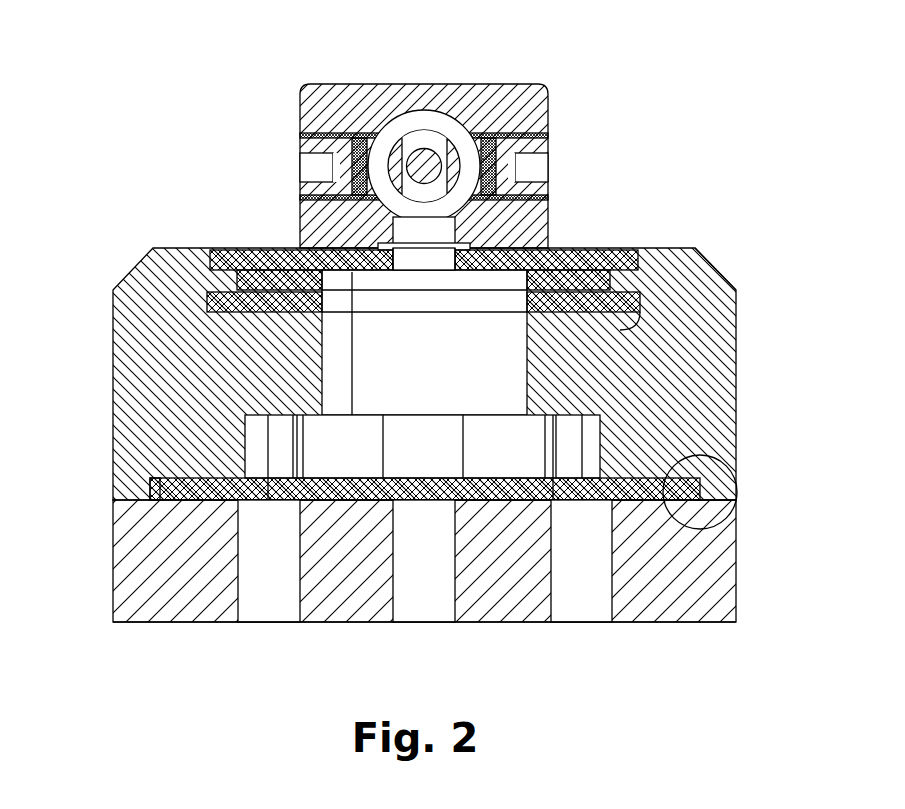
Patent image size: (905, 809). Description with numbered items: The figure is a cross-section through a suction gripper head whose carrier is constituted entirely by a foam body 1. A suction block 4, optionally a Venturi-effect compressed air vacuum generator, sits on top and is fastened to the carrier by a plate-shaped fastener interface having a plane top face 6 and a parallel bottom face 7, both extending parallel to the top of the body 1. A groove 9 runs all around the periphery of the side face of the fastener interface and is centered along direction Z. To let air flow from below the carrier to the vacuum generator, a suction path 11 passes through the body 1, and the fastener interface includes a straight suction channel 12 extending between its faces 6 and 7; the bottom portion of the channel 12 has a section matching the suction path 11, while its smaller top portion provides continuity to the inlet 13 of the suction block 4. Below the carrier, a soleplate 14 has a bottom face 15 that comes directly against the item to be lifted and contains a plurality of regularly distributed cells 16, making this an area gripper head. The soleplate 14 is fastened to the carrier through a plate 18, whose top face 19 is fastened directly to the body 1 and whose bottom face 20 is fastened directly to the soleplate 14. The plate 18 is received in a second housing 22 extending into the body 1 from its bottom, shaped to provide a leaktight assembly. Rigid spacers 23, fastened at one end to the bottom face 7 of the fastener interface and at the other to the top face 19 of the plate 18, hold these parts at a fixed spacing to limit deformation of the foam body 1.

The foam body 1 is at (716, 398).
The suction block 4 is at (505, 95).
The top face 6 is at (668, 250).
The bottom face 7 is at (640, 330).
The groove 9 is at (612, 282).
The suction path 11 is at (373, 375).
The suction channel 12 is at (452, 300).
The inlet 13 is at (432, 235).
The soleplate 14 is at (705, 588).
The bottom face 15 is at (658, 623).
The cells 16 is at (276, 610).
The plate 18 is at (700, 489).
The top face 19 is at (673, 457).
The bottom face 20 is at (685, 531).
The second housing 22 is at (150, 484).
The spacer 23 is at (258, 446).